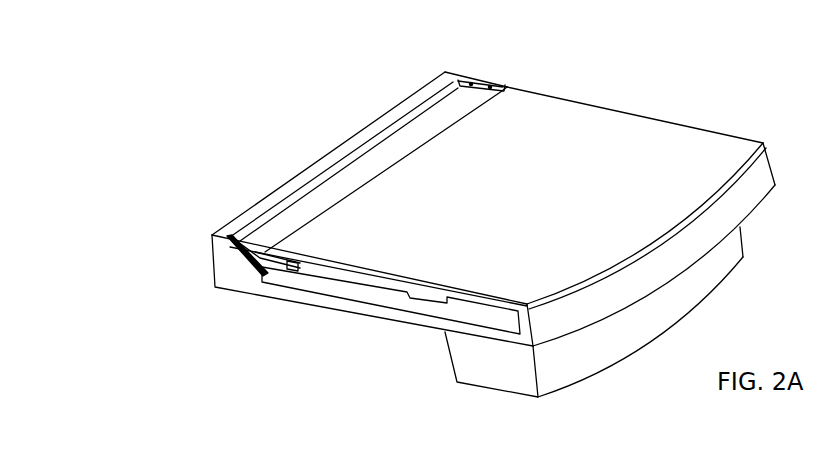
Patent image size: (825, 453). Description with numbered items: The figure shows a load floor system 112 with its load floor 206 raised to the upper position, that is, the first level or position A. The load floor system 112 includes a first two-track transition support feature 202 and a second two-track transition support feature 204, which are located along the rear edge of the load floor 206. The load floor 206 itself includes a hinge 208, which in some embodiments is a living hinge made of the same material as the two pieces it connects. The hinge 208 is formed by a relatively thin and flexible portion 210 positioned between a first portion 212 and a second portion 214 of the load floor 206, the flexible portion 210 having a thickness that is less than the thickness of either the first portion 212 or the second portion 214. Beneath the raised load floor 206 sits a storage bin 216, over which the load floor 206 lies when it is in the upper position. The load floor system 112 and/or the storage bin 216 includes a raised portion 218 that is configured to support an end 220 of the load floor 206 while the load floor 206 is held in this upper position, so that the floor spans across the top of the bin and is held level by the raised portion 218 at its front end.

The load floor system 112 is at (152, 92).
The first two-track transition support feature 202 is at (228, 240).
The second two-track transition support feature 204 is at (488, 81).
The load floor 206 is at (617, 163).
The hinge 208 is at (358, 178).
The relatively thin and flexible portion 210 is at (378, 170).
The first portion 212 is at (297, 215).
The second portion 214 is at (683, 158).
The storage bin 216 is at (396, 299).
The raised portion 218 is at (527, 323).
The end 220 is at (592, 272).